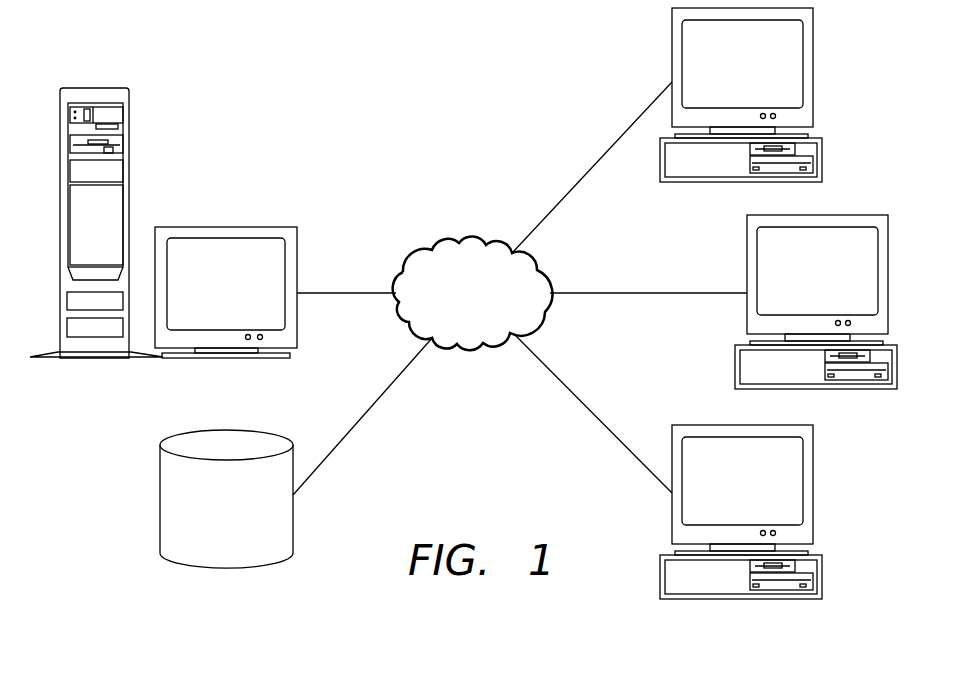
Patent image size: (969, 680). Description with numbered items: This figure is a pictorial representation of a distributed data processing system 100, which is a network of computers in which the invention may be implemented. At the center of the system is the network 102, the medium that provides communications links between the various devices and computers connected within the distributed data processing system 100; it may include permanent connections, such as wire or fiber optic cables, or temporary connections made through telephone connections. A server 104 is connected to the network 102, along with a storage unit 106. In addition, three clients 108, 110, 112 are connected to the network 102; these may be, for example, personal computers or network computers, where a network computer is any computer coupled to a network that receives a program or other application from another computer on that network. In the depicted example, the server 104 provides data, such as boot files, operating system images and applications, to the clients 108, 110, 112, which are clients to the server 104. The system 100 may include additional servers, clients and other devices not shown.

The distributed data processing system 100 is at (349, 99).
The network 102 is at (492, 305).
The server 104 is at (247, 294).
The storage unit 106 is at (247, 517).
The client 108 is at (762, 78).
The client 110 is at (837, 285).
The client 112 is at (762, 495).